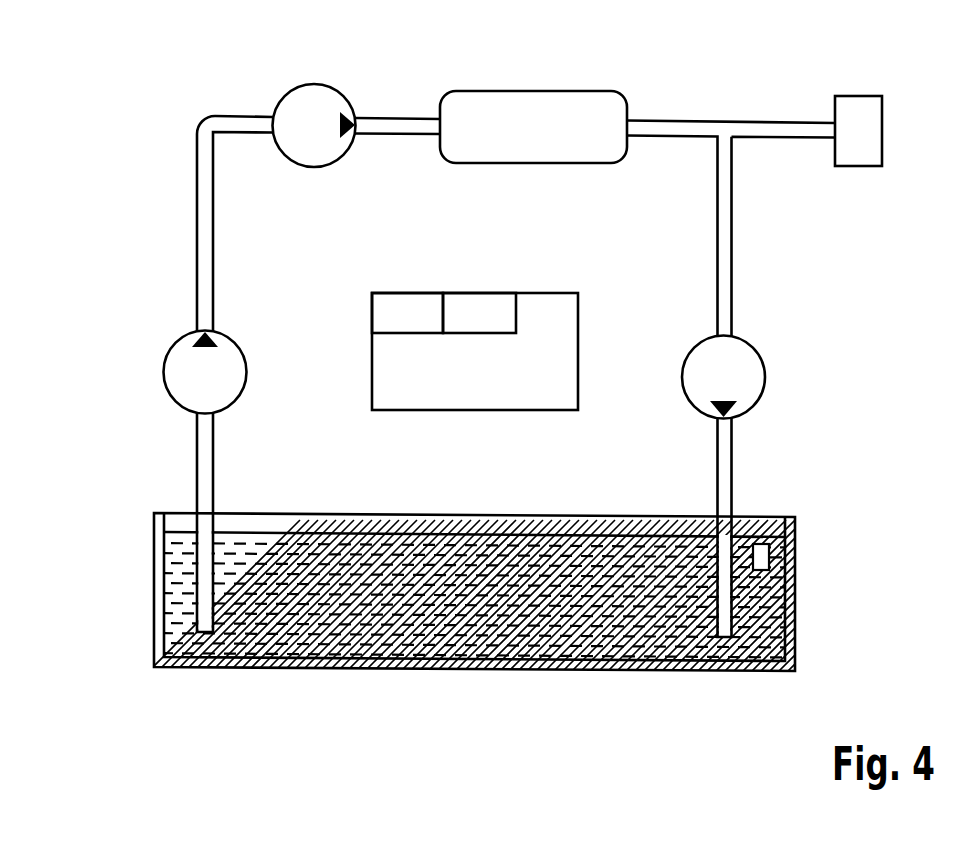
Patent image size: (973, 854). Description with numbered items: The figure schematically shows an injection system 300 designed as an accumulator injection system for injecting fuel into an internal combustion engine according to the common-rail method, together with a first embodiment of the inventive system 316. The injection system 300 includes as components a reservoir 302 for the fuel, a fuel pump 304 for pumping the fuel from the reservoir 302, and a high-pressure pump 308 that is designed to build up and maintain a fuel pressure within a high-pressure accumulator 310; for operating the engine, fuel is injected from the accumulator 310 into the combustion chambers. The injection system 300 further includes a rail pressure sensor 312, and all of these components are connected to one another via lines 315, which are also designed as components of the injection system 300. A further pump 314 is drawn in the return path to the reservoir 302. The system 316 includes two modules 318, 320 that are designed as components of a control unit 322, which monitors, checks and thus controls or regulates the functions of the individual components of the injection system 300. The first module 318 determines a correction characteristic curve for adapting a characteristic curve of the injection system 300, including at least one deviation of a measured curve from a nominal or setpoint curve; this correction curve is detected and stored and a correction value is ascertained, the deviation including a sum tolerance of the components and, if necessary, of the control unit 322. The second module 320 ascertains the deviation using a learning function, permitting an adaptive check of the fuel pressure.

The injection system 300 is at (198, 702).
The reservoir 302 is at (163, 587).
The fuel pump 304 is at (174, 376).
The high-pressure pump 308 is at (313, 104).
The high-pressure accumulator 310 is at (530, 108).
The rail pressure sensor 312 is at (858, 111).
The return pump 314 is at (753, 380).
The lines 315 is at (233, 121).
The system 316 is at (459, 313).
The first module 318 is at (405, 306).
The second module 320 is at (477, 306).
The control unit 322 is at (475, 359).